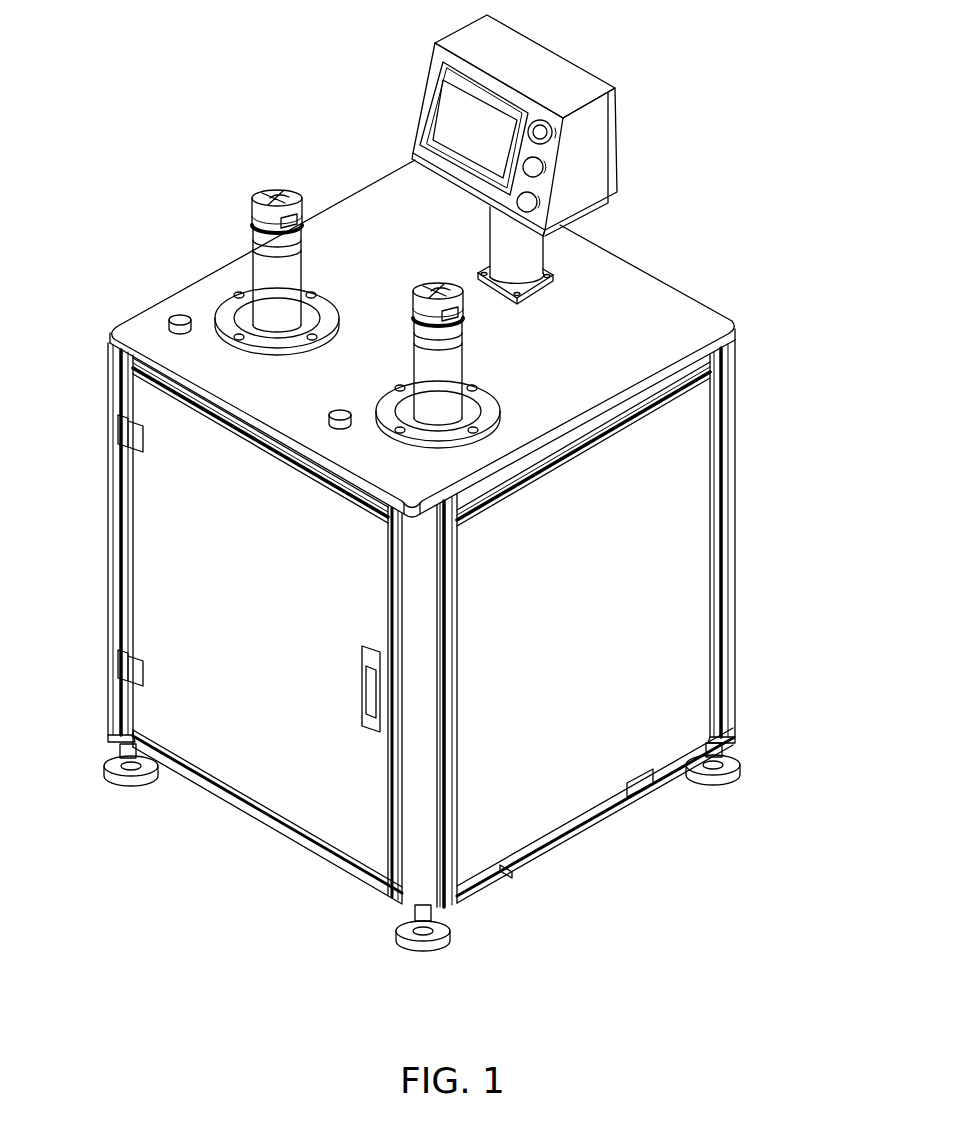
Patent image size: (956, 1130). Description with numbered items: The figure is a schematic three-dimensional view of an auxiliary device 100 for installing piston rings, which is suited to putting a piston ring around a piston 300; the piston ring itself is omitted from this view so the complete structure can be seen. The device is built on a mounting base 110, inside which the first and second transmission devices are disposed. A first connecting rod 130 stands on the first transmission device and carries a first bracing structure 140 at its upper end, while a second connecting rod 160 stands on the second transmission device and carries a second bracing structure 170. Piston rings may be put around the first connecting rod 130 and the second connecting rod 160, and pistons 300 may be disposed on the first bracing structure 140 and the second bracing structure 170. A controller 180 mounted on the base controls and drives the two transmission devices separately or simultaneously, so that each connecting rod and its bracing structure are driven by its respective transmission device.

The auxiliary device for installing piston rings 100 is at (118, 92).
The mounting base 110 is at (667, 503).
The first connecting rod 130 is at (272, 277).
The first bracing structure 140 is at (262, 248).
The second connecting rod 160 is at (448, 357).
The second bracing structure 170 is at (455, 338).
The controller 180 is at (618, 222).
The piston 300 is at (284, 198).